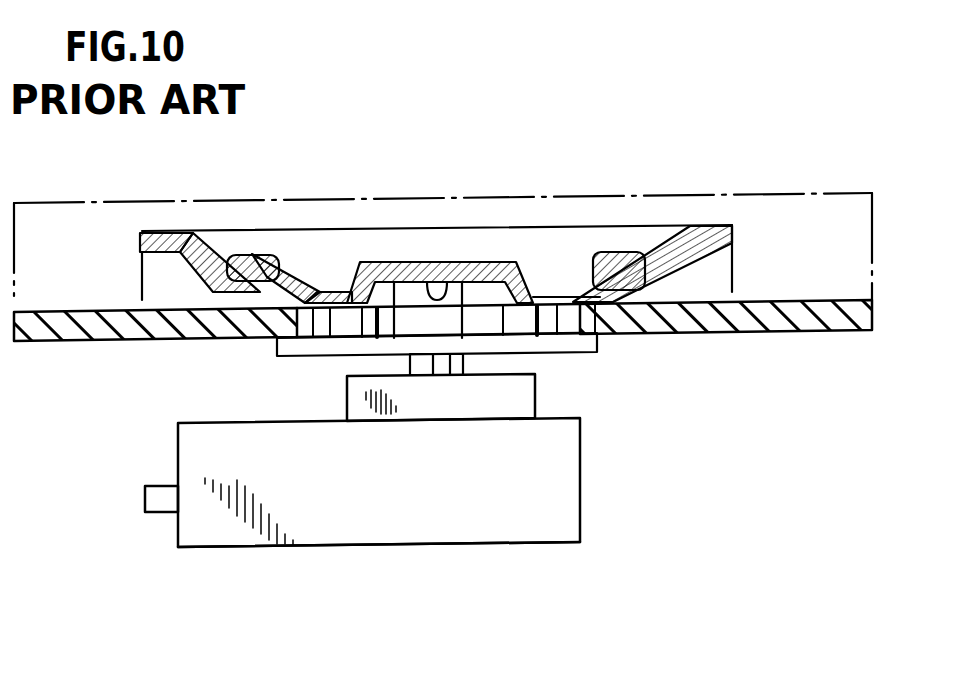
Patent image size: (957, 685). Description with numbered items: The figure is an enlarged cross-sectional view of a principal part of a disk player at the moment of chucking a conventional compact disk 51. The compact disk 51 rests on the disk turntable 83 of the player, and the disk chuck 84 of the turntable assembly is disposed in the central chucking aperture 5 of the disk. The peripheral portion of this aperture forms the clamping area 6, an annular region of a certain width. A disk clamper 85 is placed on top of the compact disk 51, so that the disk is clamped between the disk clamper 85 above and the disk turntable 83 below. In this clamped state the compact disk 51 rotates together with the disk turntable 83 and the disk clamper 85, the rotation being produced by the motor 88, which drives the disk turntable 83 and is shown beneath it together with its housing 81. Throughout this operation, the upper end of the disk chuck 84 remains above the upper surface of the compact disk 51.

The disk clamper 85 is at (472, 262).
The compact disk 51 is at (754, 336).
The clamping area 6 is at (312, 332).
The disk chuck 84 is at (403, 305).
The chucking aperture 5 is at (530, 322).
The disk turntable 83 is at (557, 322).
The motor housing 81 is at (590, 462).
The motor 88 is at (455, 547).